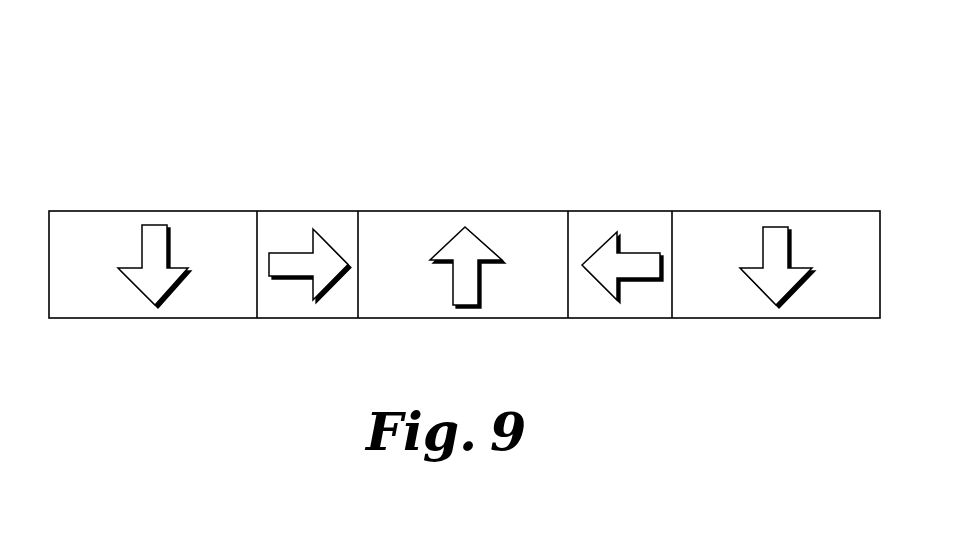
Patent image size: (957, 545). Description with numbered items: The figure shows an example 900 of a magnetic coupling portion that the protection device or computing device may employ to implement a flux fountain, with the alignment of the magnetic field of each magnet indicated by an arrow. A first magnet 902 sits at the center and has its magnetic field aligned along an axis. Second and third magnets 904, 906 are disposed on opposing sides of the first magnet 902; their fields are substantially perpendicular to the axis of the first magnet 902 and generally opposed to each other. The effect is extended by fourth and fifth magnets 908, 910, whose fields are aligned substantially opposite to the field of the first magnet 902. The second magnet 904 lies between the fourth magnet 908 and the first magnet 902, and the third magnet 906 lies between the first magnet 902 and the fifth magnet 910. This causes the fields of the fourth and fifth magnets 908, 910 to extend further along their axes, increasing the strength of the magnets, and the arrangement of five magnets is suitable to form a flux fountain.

The example of a magnetic coupling portion 900 is at (168, 82).
The first magnet 902 is at (465, 208).
The second magnet 904 is at (307, 208).
The third magnet 906 is at (620, 208).
The fourth magnet 908 is at (153, 208).
The fifth magnet 910 is at (775, 208).